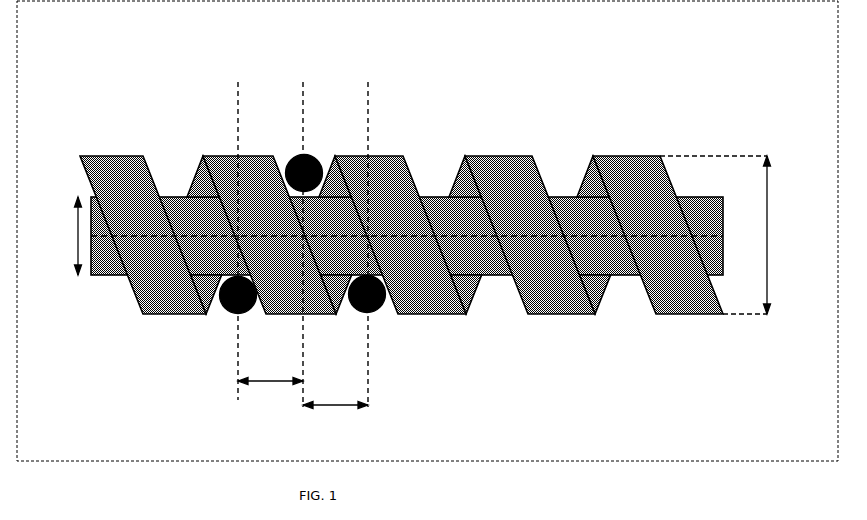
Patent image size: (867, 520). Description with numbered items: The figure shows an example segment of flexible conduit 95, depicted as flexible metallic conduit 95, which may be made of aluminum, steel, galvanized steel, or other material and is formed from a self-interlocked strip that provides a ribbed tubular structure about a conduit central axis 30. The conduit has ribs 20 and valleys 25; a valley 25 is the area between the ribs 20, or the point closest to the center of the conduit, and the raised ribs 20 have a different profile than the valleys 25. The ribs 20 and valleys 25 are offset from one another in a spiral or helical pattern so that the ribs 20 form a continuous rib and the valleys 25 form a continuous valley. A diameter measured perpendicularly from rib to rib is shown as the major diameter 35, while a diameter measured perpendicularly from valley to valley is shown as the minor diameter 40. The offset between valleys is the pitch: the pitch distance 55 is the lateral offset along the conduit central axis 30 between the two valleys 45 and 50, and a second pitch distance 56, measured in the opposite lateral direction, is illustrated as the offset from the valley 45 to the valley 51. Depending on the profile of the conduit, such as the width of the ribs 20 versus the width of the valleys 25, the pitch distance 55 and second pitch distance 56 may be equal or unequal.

The flexible metallic conduit 95 is at (401, 202).
The ribs 20 is at (492, 157).
The valleys 25 is at (558, 195).
The conduit central axis 30 is at (613, 235).
The valley 45 is at (303, 156).
The valley 50 is at (382, 310).
The valley 51 is at (228, 310).
The major diameter 35 is at (729, 235).
The minor diameter 40 is at (63, 236).
The pitch distance 55 is at (335, 418).
The second pitch distance 56 is at (270, 393).